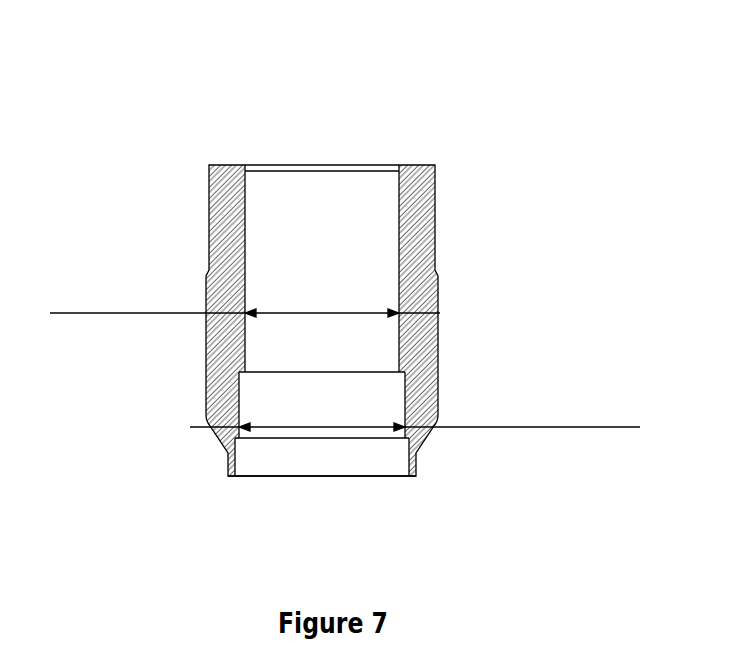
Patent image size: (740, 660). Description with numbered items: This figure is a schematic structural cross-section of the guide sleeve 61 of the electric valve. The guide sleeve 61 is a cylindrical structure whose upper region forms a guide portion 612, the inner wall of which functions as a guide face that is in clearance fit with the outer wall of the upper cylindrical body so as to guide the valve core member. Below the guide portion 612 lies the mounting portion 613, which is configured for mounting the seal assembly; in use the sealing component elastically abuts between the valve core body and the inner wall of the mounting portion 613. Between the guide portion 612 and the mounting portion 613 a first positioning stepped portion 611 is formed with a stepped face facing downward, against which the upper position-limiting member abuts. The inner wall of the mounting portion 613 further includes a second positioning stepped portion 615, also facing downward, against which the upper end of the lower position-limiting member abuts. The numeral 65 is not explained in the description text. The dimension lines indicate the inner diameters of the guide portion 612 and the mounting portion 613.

The guide sleeve 61 is at (332, 143).
The mounting hole 65 is at (398, 254).
The first positioning stepped portion 611 is at (238, 378).
The guide portion 612 is at (404, 278).
The mounting portion 613 is at (412, 414).
The second positioning stepped portion 615 is at (234, 440).